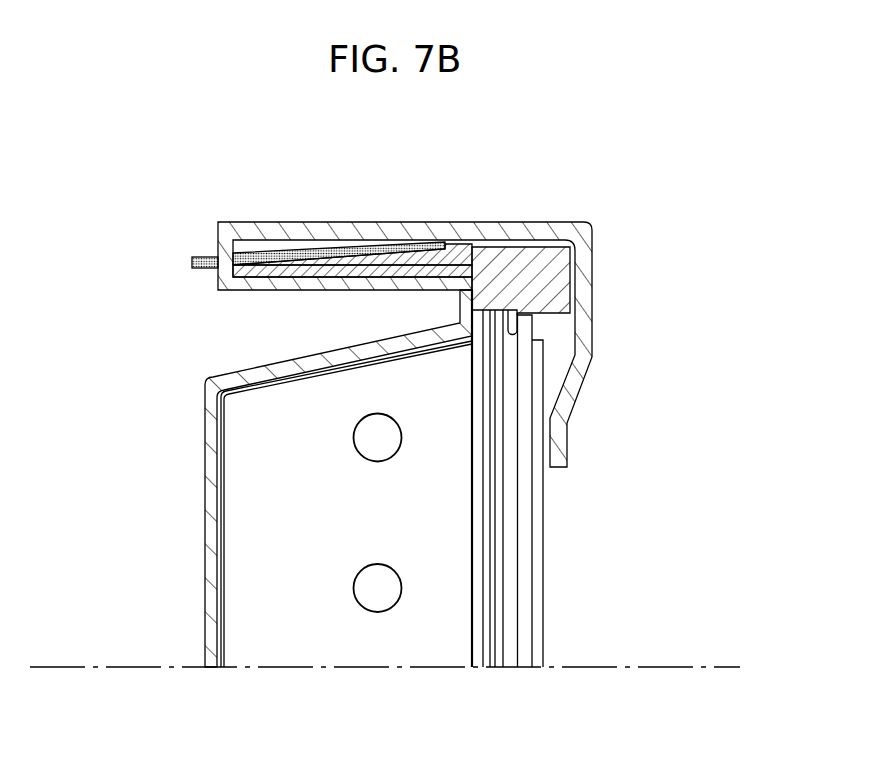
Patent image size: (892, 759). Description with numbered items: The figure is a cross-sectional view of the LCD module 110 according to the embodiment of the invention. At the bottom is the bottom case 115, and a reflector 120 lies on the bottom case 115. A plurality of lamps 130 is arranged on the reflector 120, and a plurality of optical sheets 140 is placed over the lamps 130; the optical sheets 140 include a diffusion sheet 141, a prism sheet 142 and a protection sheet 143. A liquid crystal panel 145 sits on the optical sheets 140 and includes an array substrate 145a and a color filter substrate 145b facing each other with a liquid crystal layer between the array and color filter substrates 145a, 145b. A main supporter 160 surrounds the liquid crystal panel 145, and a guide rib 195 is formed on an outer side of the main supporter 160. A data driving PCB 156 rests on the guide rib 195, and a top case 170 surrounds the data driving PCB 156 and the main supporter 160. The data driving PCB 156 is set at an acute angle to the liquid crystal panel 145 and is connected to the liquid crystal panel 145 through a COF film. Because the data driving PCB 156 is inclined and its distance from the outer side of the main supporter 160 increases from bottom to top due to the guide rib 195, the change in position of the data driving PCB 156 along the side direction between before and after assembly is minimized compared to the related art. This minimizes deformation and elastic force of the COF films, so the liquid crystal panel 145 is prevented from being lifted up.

The LCD module 110 is at (678, 188).
The bottom case 115 is at (210, 470).
The reflector 120 is at (222, 515).
The lamps 130 is at (373, 583).
The optical sheets 140 is at (363, 480).
The diffusion sheet 141 is at (472, 468).
The prism sheet 142 is at (490, 492).
The protection sheet 143 is at (500, 513).
The liquid crystal panel 145 is at (681, 540).
The array substrate 145a is at (528, 548).
The color filter substrate 145b is at (540, 527).
The data driving PCB 156 is at (318, 253).
The main supporter 160 is at (545, 277).
The top case 170 is at (500, 222).
The guide rib 195 is at (440, 250).